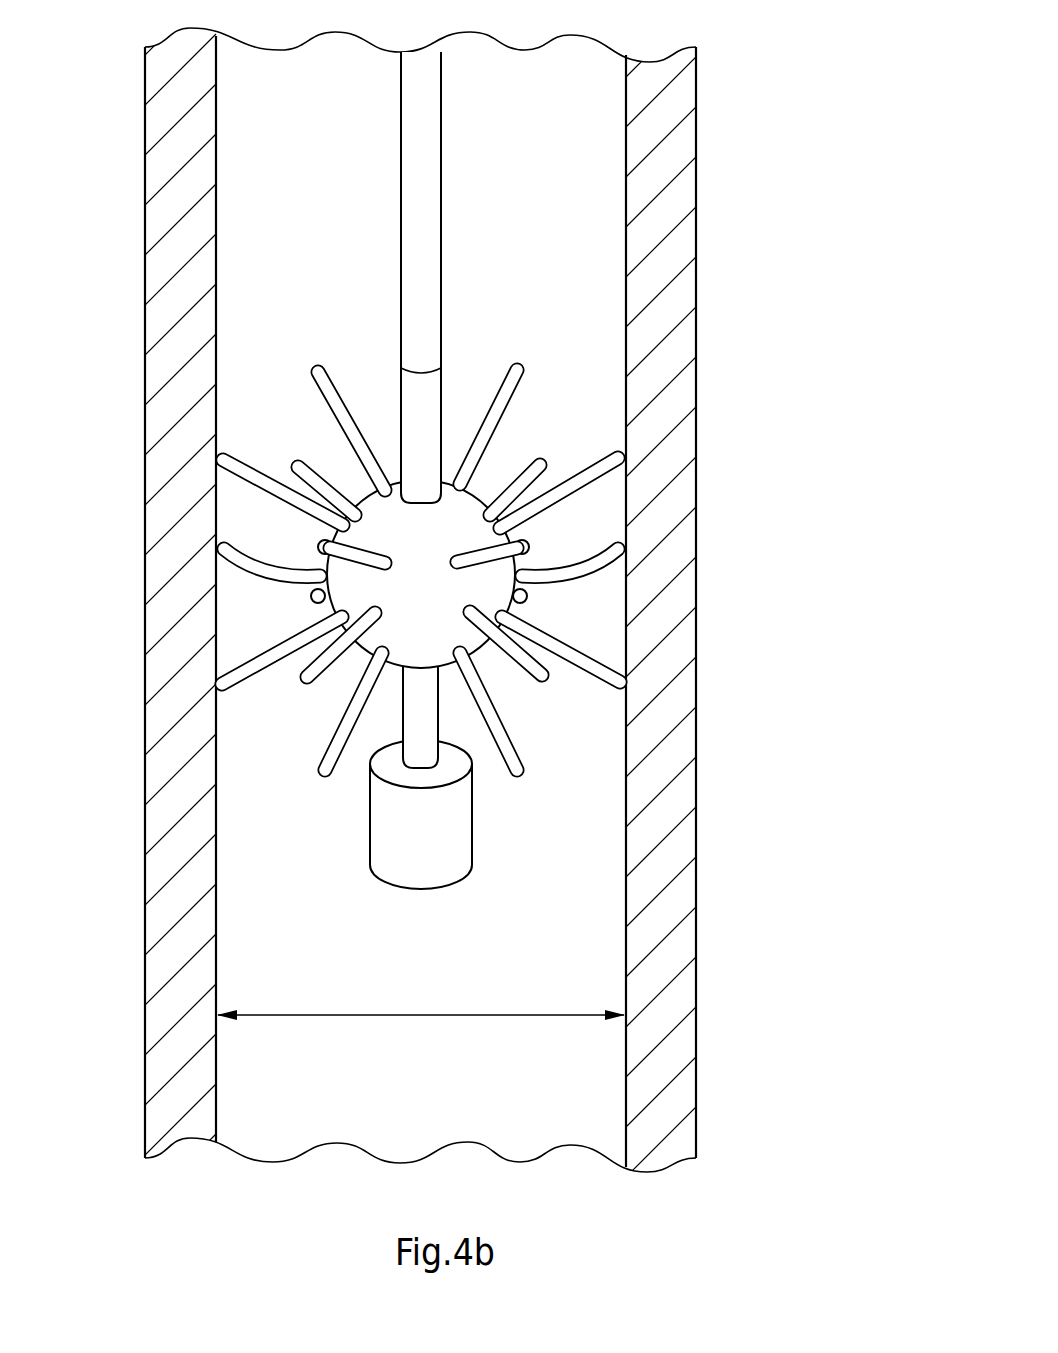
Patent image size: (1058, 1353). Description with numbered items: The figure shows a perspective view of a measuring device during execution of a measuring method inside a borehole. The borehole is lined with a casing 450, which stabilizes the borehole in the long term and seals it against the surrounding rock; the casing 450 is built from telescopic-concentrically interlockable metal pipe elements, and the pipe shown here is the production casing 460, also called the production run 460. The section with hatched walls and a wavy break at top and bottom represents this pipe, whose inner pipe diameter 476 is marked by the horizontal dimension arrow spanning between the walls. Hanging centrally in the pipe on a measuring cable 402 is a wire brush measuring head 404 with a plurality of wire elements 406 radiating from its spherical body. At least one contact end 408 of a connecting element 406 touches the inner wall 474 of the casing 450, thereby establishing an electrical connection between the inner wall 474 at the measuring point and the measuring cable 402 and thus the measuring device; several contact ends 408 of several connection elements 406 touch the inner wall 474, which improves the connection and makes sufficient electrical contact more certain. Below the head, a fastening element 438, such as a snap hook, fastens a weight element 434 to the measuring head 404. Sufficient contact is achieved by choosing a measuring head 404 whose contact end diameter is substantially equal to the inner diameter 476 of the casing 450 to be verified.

The measuring cable 402 is at (470, 265).
The wire brush measuring head 404 is at (573, 530).
The wire element 406 is at (563, 650).
The contact end 408 is at (233, 676).
The weight element 434 is at (447, 833).
The fastening element 438 is at (423, 705).
The casing 450 is at (750, 738).
The production casing 460 is at (662, 822).
The inner wall 474 is at (218, 920).
The inner pipe diameter 476 is at (418, 1015).